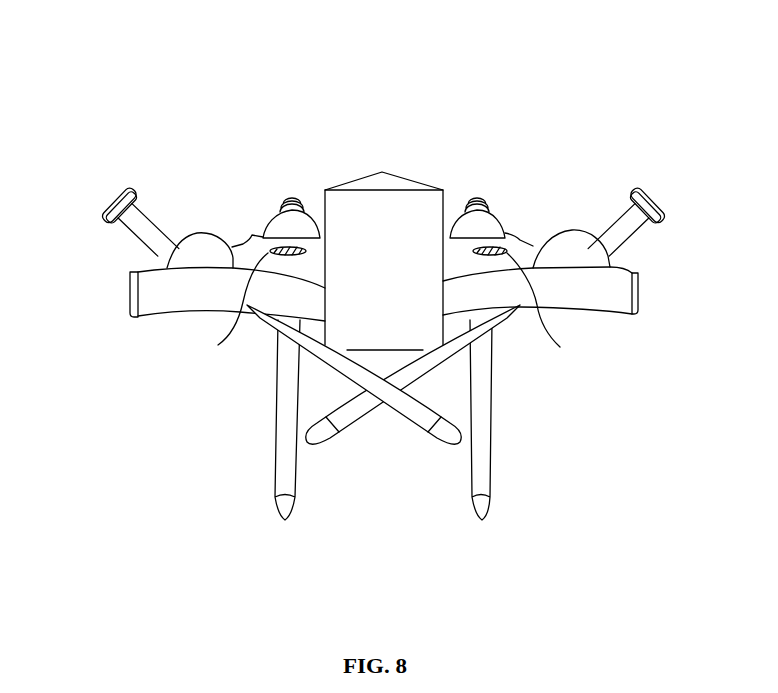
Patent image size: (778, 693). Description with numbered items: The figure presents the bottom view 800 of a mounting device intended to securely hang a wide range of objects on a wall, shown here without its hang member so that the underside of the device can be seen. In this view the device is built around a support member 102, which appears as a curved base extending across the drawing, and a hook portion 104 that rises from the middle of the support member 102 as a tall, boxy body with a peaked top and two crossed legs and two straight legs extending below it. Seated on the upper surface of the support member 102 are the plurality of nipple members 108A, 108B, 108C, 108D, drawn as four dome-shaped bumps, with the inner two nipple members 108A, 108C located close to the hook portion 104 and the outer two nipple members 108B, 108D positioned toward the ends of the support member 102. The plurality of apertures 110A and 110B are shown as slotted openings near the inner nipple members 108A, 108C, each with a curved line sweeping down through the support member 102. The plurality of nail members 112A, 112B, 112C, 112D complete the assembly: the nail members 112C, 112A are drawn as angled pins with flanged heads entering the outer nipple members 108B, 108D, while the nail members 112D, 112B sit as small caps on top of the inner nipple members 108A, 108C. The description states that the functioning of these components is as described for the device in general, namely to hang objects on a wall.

The bottom view 800 is at (203, 68).
The support member 102 is at (640, 295).
The hook portion 104 is at (386, 170).
The nipple member 108A is at (262, 222).
The nipple member 108B is at (140, 258).
The nipple member 108C is at (505, 218).
The nipple member 108D is at (637, 255).
The aperture 110A is at (218, 345).
The aperture 110B is at (560, 347).
The nail member 112A is at (665, 195).
The nail member 112B is at (478, 195).
The nail member 112C is at (105, 203).
The nail member 112D is at (290, 192).